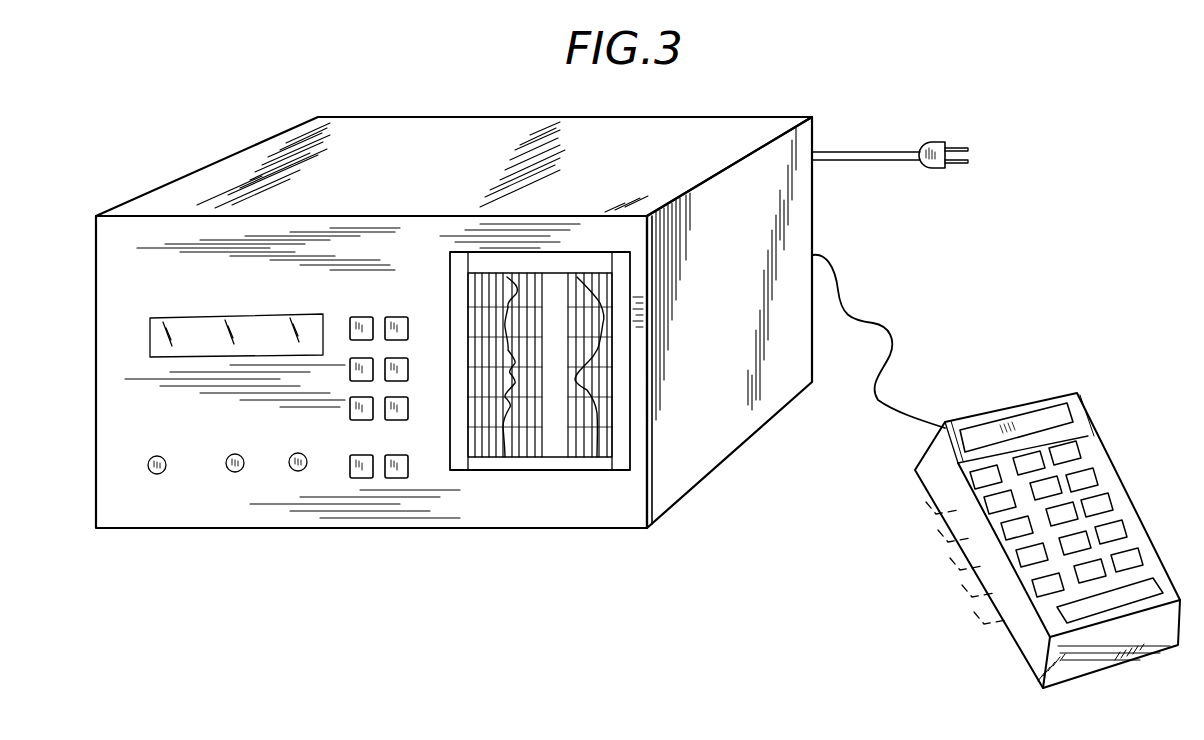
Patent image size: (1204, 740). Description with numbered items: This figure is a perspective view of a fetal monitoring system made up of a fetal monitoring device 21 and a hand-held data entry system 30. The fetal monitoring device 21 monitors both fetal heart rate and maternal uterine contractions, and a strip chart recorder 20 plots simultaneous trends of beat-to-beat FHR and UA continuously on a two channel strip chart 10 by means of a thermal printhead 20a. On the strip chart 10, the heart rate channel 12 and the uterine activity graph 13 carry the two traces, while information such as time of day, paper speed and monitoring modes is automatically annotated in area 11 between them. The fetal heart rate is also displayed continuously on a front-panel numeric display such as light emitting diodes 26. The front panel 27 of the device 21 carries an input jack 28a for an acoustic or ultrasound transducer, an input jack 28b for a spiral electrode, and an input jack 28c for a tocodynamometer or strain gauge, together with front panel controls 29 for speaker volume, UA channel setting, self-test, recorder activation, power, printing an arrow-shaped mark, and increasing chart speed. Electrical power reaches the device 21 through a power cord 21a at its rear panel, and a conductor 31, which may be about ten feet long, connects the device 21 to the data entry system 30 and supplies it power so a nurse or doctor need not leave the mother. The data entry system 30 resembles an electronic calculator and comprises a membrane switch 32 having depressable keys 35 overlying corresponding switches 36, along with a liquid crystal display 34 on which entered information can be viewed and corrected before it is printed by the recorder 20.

The strip chart 10 is at (506, 458).
The annotation area 11 is at (557, 445).
The heart rate channel 12 is at (526, 373).
The uterine activity graph 13 is at (598, 458).
The strip chart recorder 20 is at (454, 470).
The thermal printhead 20a is at (617, 244).
The fetal monitoring device 21 is at (218, 163).
The power cord 21a is at (942, 143).
The light emitting diodes 26 is at (163, 353).
The front panel 27 is at (115, 265).
The input jack 28a is at (158, 474).
The input jack 28b is at (229, 470).
The input jack 28c is at (291, 469).
The front panel controls 29 is at (371, 316).
The data entry system 30 is at (1034, 519).
The conductor 31 is at (892, 348).
The membrane switch 32 is at (1150, 582).
The liquid crystal display 34 is at (1077, 425).
The depressable keys 35 is at (1090, 478).
The switches 36 is at (975, 535).